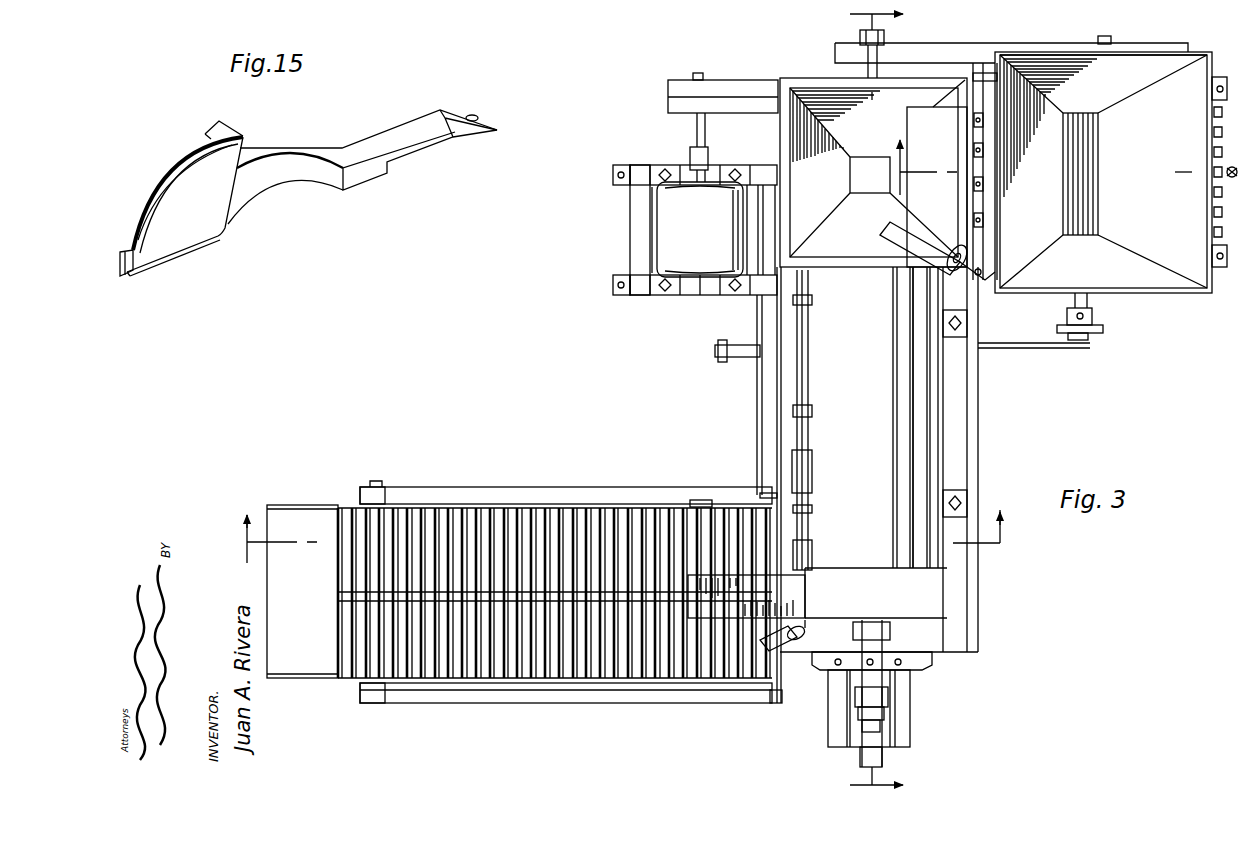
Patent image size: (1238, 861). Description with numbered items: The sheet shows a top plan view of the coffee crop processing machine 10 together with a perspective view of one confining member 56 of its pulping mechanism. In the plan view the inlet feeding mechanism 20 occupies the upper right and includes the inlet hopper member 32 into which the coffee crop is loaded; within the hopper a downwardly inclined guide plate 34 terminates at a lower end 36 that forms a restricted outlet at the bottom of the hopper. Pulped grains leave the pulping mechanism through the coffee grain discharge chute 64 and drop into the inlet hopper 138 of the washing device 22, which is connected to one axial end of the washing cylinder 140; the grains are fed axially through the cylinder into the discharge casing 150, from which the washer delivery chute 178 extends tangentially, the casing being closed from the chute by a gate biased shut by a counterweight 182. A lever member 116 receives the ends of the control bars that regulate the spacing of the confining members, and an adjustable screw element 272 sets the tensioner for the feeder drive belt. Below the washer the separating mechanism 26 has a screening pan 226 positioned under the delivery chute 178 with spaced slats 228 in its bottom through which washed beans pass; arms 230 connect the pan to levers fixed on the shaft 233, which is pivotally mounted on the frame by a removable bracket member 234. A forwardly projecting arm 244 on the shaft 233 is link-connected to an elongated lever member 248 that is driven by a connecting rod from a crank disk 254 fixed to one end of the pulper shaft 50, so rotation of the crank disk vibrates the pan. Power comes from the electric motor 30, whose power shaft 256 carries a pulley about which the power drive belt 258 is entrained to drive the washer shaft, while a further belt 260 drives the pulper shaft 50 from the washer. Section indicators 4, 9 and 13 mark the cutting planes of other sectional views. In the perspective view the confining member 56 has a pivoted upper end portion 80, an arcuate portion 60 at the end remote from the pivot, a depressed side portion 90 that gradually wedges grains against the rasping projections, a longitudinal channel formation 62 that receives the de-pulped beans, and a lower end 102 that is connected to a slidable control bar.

In FIG. 3, the coffee crop processing machine 10 is at (670, 322).
In FIG. 3, the inlet feeding mechanism 20 is at (1146, 303).
In FIG. 3, the washing device 22 is at (915, 437).
In FIG. 3, the separating mechanism 26 is at (505, 462).
In FIG. 3, the electric motor 30 is at (697, 229).
In FIG. 3, the inlet hopper member 32 is at (1178, 292).
In FIG. 3, the guide plate 34 is at (1103, 88).
In FIG. 3, the lower end of guide plate 36 is at (1100, 175).
In FIG. 3, the pulper shaft 50 is at (1088, 315).
In FIG. 15, the confining member 56 is at (203, 136).
In FIG. 15, the arcuate portion 60 is at (180, 185).
In FIG. 15, the longitudinal channel formation 62 is at (140, 270).
In FIG. 3, the coffee grain discharge chute 64 is at (932, 120).
In FIG. 15, the upper end portion 80 is at (483, 116).
In FIG. 15, the depressed side portion 90 is at (297, 153).
In FIG. 15, the end of confining member 102 is at (122, 254).
In FIG. 3, the lever member 116 is at (913, 235).
In FIG. 3, the inlet hopper 138 is at (813, 80).
In FIG. 3, the washing cylinder 140 is at (917, 541).
In FIG. 3, the discharge casing member 150 is at (876, 667).
In FIG. 3, the washer delivery chute 178 is at (746, 596).
In FIG. 3, the counterweight 182 is at (783, 652).
In FIG. 3, the screening pan 226 is at (538, 503).
In FIG. 3, the slats 228 is at (567, 515).
In FIG. 3, the arms 230 is at (706, 502).
In FIG. 3, the shaft 233 is at (757, 312).
In FIG. 3, the removable bracket member 234 is at (762, 172).
In FIG. 3, the forwardly projecting arm 244 is at (740, 358).
In FIG. 3, the elongated lever member 248 is at (1018, 349).
In FIG. 3, the crank disk 254 is at (1100, 340).
In FIG. 3, the power shaft 256 is at (692, 130).
In FIG. 3, the power drive belt 258 is at (750, 83).
In FIG. 3, the belt 260 is at (983, 45).
In FIG. 3, the adjustable screw element 272 is at (1228, 170).
In FIG. 3, the section line 4 is at (1054, 176).
In FIG. 3, the section line 9 is at (886, 402).
In FIG. 3, the section line 13 is at (628, 525).